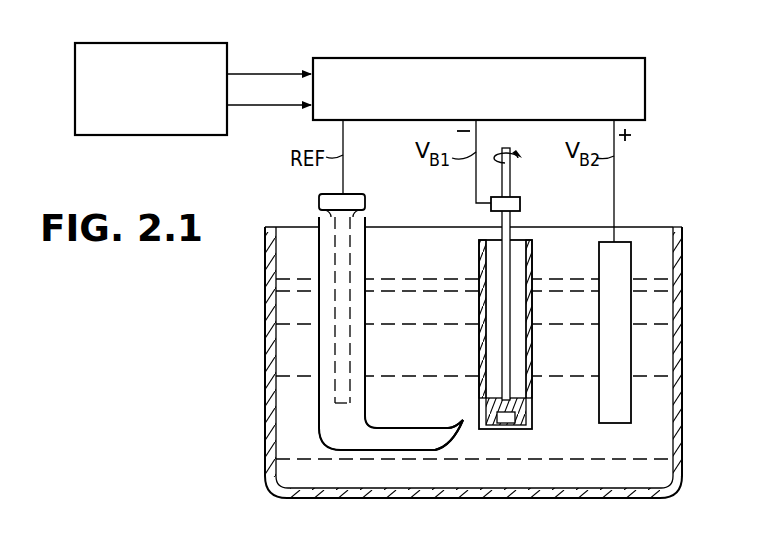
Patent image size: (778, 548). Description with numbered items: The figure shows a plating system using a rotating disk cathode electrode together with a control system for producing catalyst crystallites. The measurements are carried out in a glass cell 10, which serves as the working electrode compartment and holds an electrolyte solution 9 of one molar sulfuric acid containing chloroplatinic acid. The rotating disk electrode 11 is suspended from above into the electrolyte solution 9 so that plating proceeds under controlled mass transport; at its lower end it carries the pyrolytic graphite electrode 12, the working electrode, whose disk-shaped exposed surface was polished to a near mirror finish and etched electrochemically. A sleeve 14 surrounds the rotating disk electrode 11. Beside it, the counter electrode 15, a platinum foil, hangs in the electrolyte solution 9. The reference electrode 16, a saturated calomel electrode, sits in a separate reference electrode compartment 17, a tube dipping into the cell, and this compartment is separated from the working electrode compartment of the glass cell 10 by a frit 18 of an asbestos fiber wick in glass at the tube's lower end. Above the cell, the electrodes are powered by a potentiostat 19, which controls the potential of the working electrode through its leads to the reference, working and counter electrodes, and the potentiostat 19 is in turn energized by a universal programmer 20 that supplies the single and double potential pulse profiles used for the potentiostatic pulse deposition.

The electrolyte solution 9 is at (660, 356).
The glass cell 10 is at (681, 256).
The rotating disk electrode 11 is at (495, 342).
The pyrolytic graphite electrode 12 is at (506, 425).
The electrode holder 14 is at (517, 272).
The counter electrode 15 is at (622, 264).
The reference electrode 16 is at (335, 356).
The reference electrode compartment 17 is at (319, 300).
The frit 18 is at (393, 447).
The potentiostat 19 is at (480, 58).
The universal programmer 20 is at (152, 43).